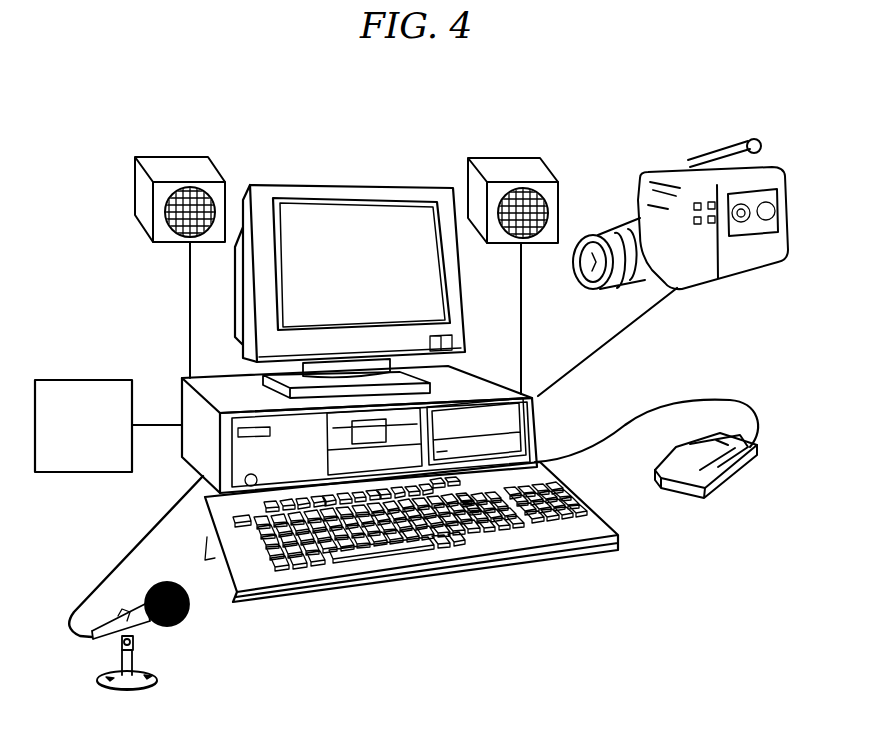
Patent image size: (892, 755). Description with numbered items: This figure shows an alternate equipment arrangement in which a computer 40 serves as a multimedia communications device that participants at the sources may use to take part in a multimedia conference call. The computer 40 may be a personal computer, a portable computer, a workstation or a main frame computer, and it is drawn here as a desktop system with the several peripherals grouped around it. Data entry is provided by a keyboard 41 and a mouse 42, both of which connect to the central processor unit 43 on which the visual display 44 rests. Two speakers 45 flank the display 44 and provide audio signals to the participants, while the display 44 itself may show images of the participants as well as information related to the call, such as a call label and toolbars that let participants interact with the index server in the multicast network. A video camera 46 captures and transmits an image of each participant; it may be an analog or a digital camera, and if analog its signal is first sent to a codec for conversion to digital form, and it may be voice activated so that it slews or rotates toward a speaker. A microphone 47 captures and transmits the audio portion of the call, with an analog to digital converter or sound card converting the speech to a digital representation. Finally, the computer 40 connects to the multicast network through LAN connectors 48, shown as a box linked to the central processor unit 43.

The computer 40 is at (301, 86).
The keyboard 41 is at (437, 576).
The mouse 42 is at (730, 478).
The central processor unit (CPU) 43 is at (548, 425).
The visual display 44 is at (368, 183).
The speakers 45 is at (176, 157).
The video camera 46 is at (672, 170).
The microphone 47 is at (137, 648).
The LAN connectors 48 is at (87, 380).